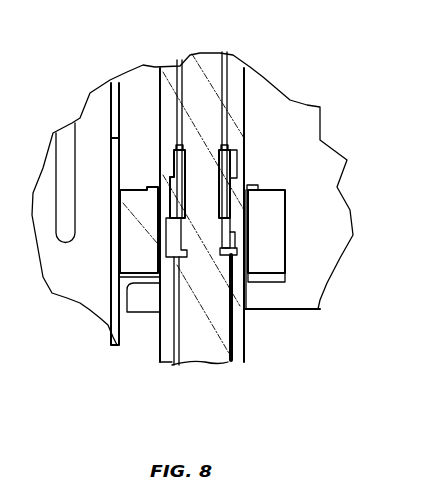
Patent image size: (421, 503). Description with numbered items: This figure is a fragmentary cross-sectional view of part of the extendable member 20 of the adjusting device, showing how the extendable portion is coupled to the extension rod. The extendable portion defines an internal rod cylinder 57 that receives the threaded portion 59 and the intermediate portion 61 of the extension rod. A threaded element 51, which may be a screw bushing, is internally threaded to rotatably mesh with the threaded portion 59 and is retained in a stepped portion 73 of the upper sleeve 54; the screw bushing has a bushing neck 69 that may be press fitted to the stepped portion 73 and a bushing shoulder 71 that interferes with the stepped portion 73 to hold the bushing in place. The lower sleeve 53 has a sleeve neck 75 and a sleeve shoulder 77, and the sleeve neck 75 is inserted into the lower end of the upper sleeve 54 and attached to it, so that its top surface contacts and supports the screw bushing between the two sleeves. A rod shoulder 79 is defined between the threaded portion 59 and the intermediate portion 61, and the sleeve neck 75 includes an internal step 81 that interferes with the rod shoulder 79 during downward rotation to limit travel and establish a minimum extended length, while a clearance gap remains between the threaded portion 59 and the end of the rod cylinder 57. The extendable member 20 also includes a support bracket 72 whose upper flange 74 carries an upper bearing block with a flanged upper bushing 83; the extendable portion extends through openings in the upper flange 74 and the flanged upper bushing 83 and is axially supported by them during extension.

The extendable member 20 is at (353, 167).
The threaded element 51 is at (237, 176).
The lower sleeve 53 is at (286, 208).
The upper sleeve 54 is at (244, 90).
The rod cylinder 57 is at (180, 67).
The threaded portion 59 is at (226, 83).
The intermediate portion 61 is at (233, 357).
The bushing neck 69 is at (174, 152).
The bushing shoulder 71 is at (233, 165).
The support bracket 72 is at (127, 333).
The stepped portion 73 is at (171, 170).
The upper flange 74 is at (286, 278).
The sleeve neck 75 is at (237, 225).
The sleeve shoulder 77 is at (237, 242).
The rod shoulder 79 is at (176, 253).
The internal step 81 is at (238, 249).
The flanged upper bushing 83 is at (258, 188).